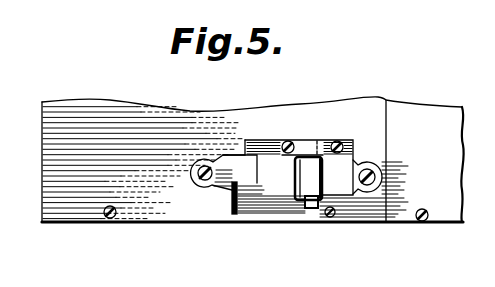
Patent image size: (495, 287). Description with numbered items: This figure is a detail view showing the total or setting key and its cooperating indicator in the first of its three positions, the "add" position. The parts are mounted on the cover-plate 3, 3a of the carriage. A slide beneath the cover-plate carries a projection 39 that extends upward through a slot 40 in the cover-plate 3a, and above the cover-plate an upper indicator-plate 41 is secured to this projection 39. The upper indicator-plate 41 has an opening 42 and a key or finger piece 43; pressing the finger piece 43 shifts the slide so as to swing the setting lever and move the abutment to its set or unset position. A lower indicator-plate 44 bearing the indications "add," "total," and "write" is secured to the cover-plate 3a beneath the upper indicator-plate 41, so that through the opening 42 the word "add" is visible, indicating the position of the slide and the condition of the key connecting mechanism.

The cover-plate 3 is at (448, 197).
The cover-plate of the carriage 3a is at (125, 117).
The projection 39 is at (316, 157).
The slot 40 is at (265, 150).
The upper indicator-plate 41 is at (283, 196).
The opening 42 is at (308, 199).
The key or finger piece 43 is at (235, 213).
The lower indicator-plate 44 is at (223, 162).